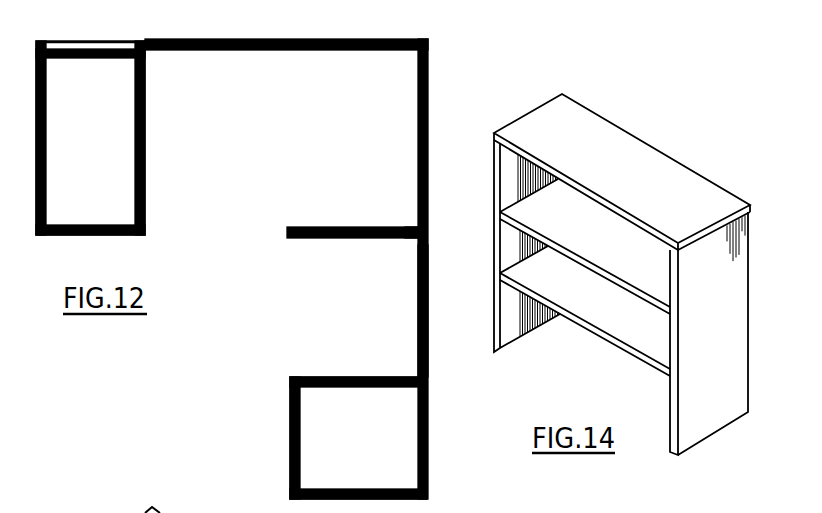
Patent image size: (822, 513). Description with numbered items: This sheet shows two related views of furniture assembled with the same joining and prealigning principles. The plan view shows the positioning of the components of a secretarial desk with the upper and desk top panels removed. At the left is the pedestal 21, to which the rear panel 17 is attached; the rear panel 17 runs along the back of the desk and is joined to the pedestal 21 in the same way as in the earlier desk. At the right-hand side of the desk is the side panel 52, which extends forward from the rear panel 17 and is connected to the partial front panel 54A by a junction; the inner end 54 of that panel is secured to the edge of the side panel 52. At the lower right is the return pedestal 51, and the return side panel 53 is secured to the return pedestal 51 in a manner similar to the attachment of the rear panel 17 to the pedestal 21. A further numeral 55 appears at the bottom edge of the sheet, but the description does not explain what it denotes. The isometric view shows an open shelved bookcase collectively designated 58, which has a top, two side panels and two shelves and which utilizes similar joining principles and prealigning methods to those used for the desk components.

In FIG. 12, the rear panel 17 is at (263, 40).
In FIG. 12, the pedestal 21 is at (120, 138).
In FIG. 12, the return pedestal 51 is at (317, 400).
In FIG. 12, the side panel 52 is at (427, 214).
In FIG. 12, the return side panel 53 is at (427, 341).
In FIG. 12, the inner end of the rear panel 54 is at (368, 227).
In FIG. 12, the partial front panel 54A is at (420, 238).
In FIG. 12, the lower element 55 is at (186, 507).
In FIG. 14, the open shelved bookcase 58 is at (692, 367).